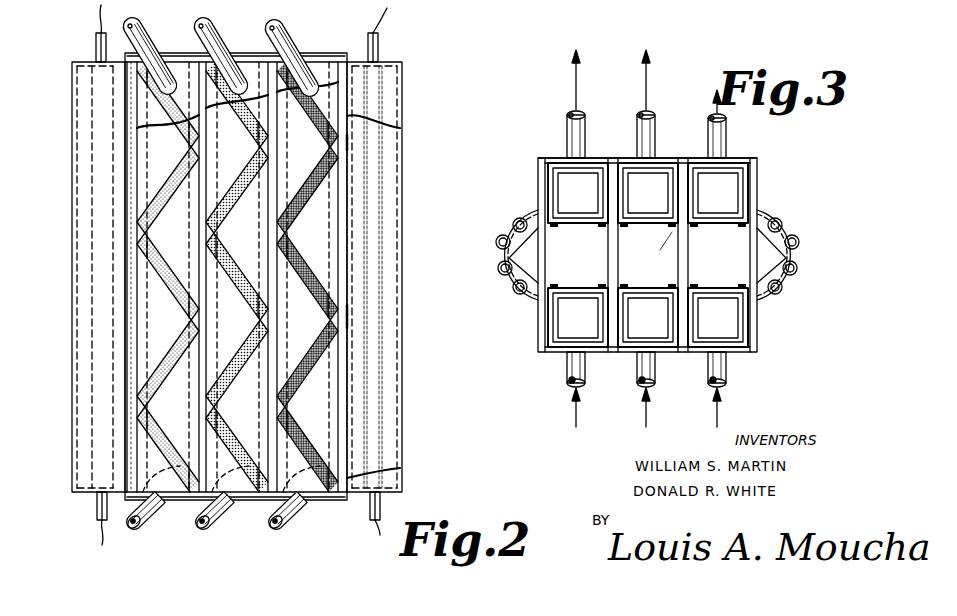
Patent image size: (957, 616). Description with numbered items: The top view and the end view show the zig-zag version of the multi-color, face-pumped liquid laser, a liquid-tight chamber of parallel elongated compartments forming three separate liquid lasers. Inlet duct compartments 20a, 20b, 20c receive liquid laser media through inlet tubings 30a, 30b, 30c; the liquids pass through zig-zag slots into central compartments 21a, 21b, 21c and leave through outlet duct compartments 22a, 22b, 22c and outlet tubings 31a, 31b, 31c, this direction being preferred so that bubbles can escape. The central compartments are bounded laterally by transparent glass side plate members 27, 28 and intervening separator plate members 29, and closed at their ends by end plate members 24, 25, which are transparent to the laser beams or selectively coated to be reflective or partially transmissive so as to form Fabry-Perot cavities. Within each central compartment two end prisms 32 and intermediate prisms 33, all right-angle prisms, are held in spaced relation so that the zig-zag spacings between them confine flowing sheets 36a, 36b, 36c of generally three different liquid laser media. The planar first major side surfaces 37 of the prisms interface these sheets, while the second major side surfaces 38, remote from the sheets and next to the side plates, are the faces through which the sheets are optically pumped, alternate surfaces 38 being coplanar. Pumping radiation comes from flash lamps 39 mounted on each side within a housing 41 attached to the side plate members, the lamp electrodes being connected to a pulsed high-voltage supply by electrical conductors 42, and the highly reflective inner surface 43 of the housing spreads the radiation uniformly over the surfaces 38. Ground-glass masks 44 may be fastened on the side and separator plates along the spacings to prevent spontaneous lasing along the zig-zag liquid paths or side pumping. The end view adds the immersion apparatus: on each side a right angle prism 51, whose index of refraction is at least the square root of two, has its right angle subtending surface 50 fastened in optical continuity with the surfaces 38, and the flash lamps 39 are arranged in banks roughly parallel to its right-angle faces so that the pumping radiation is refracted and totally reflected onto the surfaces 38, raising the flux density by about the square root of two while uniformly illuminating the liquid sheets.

In FIG. 3, the inlet duct compartment 20a is at (578, 317).
In FIG. 3, the inlet duct compartment 20b is at (648, 317).
In FIG. 3, the inlet duct compartment 20c is at (718, 317).
In FIG. 3, the central compartment 21a is at (576, 255).
In FIG. 3, the central compartment 21b is at (648, 255).
In FIG. 3, the central compartment 21c is at (719, 255).
In FIG. 3, the outlet duct compartment 22a is at (578, 193).
In FIG. 3, the outlet duct compartment 22b is at (648, 193).
In FIG. 3, the outlet duct compartment 22c is at (718, 193).
In FIG. 2, the end plate member 24 is at (325, 500).
In FIG. 2, the end plate member 25 is at (317, 53).
In FIG. 2, the side plate member 27 is at (127, 312).
In FIG. 2, the side plate member 28 is at (347, 392).
In FIG. 3, the side plate member 28 is at (758, 167).
In FIG. 3, the separator plate member 29 is at (612, 158).
In FIG. 2, the inlet tubing 30a is at (153, 525).
In FIG. 3, the inlet tubing 30a is at (567, 367).
In FIG. 2, the inlet tubing 30b is at (222, 525).
In FIG. 3, the inlet tubing 30b is at (638, 367).
In FIG. 2, the inlet tubing 30c is at (298, 500).
In FIG. 3, the inlet tubing 30c is at (708, 367).
In FIG. 2, the outlet tubing 31a is at (153, 80).
In FIG. 3, the outlet tubing 31a is at (567, 130).
In FIG. 2, the outlet tubing 31b is at (225, 67).
In FIG. 3, the outlet tubing 31b is at (638, 130).
In FIG. 2, the outlet tubing 31c is at (300, 80).
In FIG. 3, the outlet tubing 31c is at (708, 133).
In FIG. 2, the end prism 32 is at (250, 488).
In FIG. 2, the intermediate prism 33 is at (150, 345).
In FIG. 2, the flowing sheet of liquid laser medium 36a is at (175, 205).
In FIG. 2, the flowing sheet of liquid laser medium 36b is at (243, 203).
In FIG. 2, the flowing sheet of liquid laser medium 36c is at (307, 277).
In FIG. 2, the first major side surface 37 is at (320, 170).
In FIG. 2, the second major side surface 38 is at (347, 100).
In FIG. 2, the flash lamp 39 is at (90, 106).
In FIG. 3, the flash lamp 39 is at (777, 287).
In FIG. 2, the housing 41 is at (72, 147).
In FIG. 3, the housing 41 is at (790, 215).
In FIG. 2, the electrical conductor 42 is at (100, 20).
In FIG. 2, the inner surface of housing 43 is at (80, 195).
In FIG. 3, the inner surface of housing 43 is at (805, 245).
In FIG. 2, the mask 44 is at (347, 143).
In FIG. 3, the right angle subtending surface 50 is at (733, 233).
In FIG. 3, the right angle prism 51 is at (512, 215).